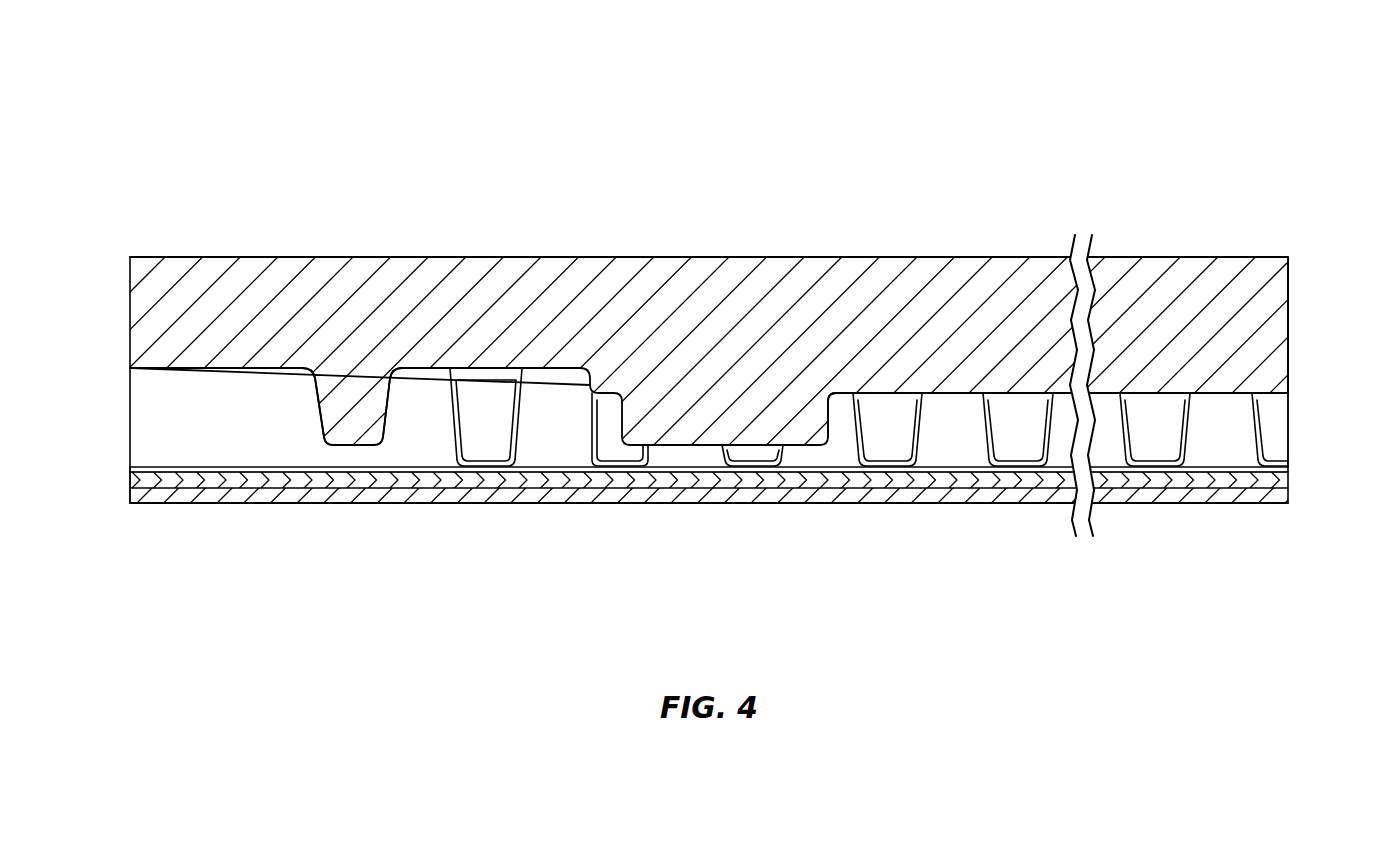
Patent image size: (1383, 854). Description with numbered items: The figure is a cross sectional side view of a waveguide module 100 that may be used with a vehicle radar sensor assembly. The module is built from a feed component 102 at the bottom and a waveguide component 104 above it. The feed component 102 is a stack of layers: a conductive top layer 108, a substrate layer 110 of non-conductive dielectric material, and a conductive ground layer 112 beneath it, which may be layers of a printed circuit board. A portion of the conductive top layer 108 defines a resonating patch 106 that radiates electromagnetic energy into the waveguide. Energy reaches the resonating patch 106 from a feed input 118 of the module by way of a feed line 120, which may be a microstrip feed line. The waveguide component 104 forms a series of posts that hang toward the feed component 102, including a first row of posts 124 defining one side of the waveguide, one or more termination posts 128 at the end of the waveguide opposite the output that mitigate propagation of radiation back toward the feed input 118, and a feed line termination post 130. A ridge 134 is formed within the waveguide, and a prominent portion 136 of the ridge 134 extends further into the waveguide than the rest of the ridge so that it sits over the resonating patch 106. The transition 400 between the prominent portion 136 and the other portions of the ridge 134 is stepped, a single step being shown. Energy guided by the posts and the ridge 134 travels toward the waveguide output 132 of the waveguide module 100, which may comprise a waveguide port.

The waveguide module 100 is at (1050, 130).
The feed component 102 is at (750, 514).
The waveguide component 104 is at (308, 254).
The resonating patch 106 is at (708, 473).
The conductive top layer 108 is at (1288, 470).
The substrate layer 110 is at (1290, 486).
The conductive ground layer 112 is at (1286, 497).
The feed input 118 is at (125, 482).
The feed line 120 is at (257, 468).
The first row of posts 124 is at (900, 417).
The termination post 128 is at (485, 397).
The feed line termination post 130 is at (360, 390).
The waveguide output 132 is at (1291, 423).
The ridge 134 is at (880, 388).
The prominent portion 136 is at (732, 425).
The transition 400 is at (827, 389).